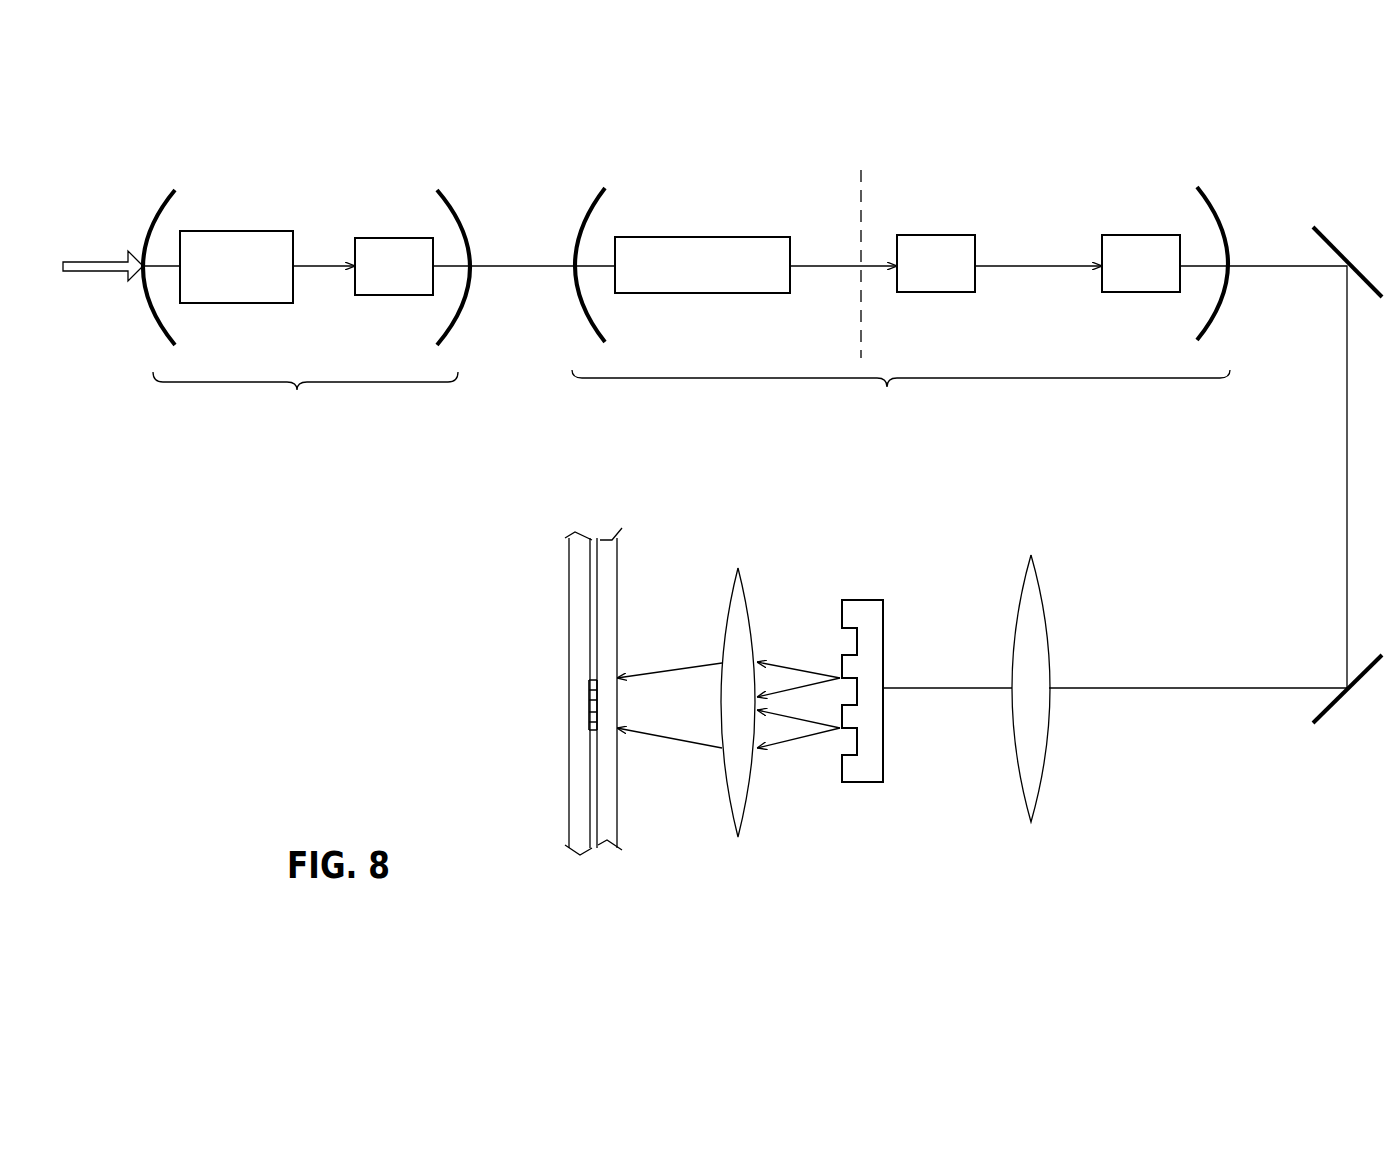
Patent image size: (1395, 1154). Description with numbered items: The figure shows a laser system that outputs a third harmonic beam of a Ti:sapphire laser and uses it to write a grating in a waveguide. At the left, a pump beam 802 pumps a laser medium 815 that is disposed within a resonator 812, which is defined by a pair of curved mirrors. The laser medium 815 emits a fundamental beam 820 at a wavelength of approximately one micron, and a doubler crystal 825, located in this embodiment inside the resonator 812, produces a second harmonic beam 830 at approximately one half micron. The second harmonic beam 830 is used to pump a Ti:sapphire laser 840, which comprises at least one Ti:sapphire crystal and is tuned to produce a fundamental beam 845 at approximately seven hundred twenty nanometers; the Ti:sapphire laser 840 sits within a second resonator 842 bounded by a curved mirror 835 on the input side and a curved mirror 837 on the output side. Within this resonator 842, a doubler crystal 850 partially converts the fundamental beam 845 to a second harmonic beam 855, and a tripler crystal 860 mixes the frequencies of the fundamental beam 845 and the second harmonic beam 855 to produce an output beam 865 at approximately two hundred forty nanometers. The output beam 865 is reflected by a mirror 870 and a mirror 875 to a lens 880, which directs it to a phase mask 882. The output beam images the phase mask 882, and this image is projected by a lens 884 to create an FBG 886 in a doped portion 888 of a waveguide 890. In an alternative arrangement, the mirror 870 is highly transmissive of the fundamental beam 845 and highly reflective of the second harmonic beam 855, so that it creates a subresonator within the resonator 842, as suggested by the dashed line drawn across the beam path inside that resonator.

The pump beam 802 is at (93, 277).
The resonator 812 is at (338, 385).
The laser medium 815 is at (237, 230).
The fundamental beam 820 is at (337, 273).
The doubler crystal 825 is at (373, 238).
The second harmonic beam 830 is at (520, 268).
The resonator mirror 835 is at (580, 220).
The resonator output mirror 837 is at (1217, 208).
The Ti:sapphire laser 840 is at (667, 237).
The resonator 842 is at (930, 380).
The fundamental beam 845 is at (833, 267).
The doubler crystal 850 is at (935, 235).
The second harmonic beam 855 is at (1065, 265).
The tripler crystal 860 is at (1143, 235).
The output beam 865 is at (1300, 265).
The mirror 870 is at (858, 192).
The mirror 875 is at (1323, 717).
The lens 880 is at (1040, 583).
The phase mask 882 is at (883, 625).
The lens 884 is at (743, 587).
The FBG 886 is at (589, 698).
The doped portion 888 is at (593, 843).
The waveguide 890 is at (580, 548).